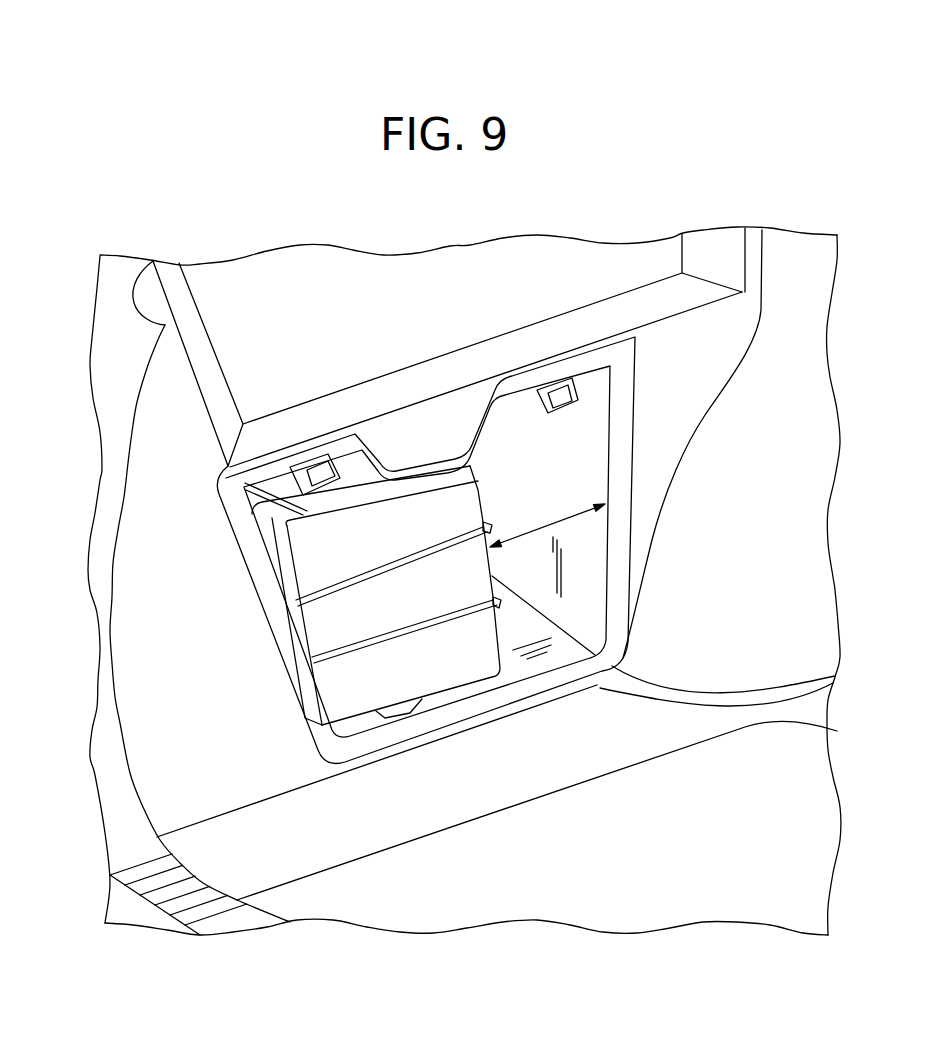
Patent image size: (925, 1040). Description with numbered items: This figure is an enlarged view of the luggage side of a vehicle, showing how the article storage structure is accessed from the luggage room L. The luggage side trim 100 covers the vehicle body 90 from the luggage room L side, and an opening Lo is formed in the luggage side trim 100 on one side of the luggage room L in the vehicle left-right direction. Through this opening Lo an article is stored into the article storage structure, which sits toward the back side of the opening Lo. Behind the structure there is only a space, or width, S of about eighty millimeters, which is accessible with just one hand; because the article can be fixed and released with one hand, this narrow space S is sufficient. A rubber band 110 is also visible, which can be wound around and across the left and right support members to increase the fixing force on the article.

The luggage side trim 100 is at (183, 758).
The rubber band 110 is at (357, 573).
The vehicle body 90 is at (559, 446).
The opening Lo is at (612, 406).
The space (width) S is at (540, 530).
The luggage room L is at (575, 857).